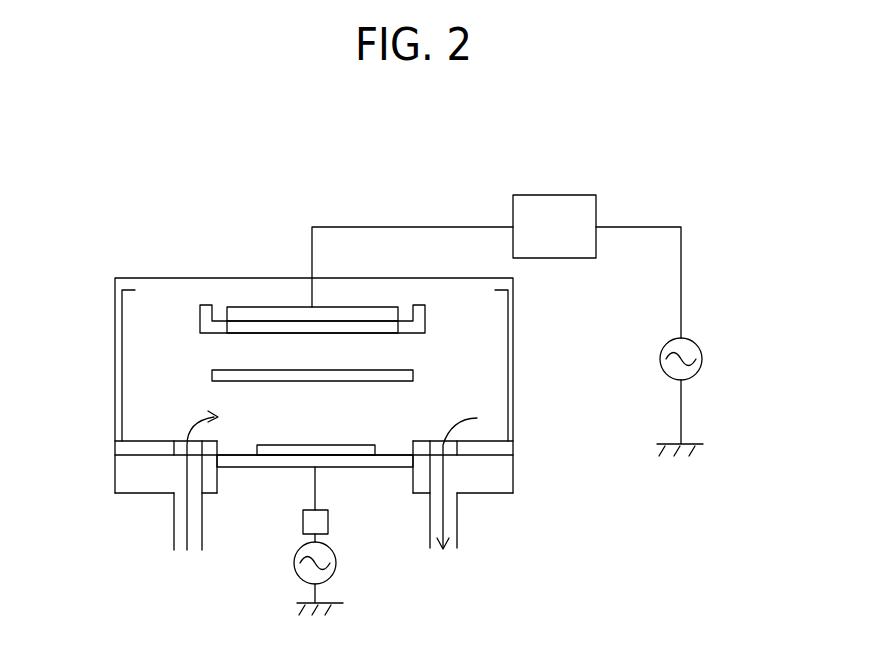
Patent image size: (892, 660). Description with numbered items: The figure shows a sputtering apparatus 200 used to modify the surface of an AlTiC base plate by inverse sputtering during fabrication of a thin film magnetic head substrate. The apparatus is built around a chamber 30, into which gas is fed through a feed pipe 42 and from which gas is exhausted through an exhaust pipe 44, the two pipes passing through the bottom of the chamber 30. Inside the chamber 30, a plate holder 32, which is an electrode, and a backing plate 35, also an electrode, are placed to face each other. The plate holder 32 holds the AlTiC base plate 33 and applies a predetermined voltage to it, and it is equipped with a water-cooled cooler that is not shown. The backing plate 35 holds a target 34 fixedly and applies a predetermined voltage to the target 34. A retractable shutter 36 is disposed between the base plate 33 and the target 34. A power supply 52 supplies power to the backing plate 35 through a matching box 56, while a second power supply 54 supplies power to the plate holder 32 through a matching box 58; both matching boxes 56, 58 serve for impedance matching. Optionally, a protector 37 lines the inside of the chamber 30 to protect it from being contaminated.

The sputtering apparatus 200 is at (524, 150).
The chamber 30 is at (143, 277).
The plate holder (electrode) 32 is at (387, 468).
The base plate 33 is at (318, 444).
The target 34 is at (340, 334).
The backing plate (electrode) 35 is at (357, 306).
The retractable shutter 36 is at (414, 375).
The protector 37 is at (426, 322).
The feed pipe 42 is at (172, 521).
The exhaust pipe 44 is at (458, 519).
The power supply 52 is at (694, 345).
The power supply 54 is at (338, 568).
The matching box 56 is at (585, 259).
The matching box 58 is at (332, 524).